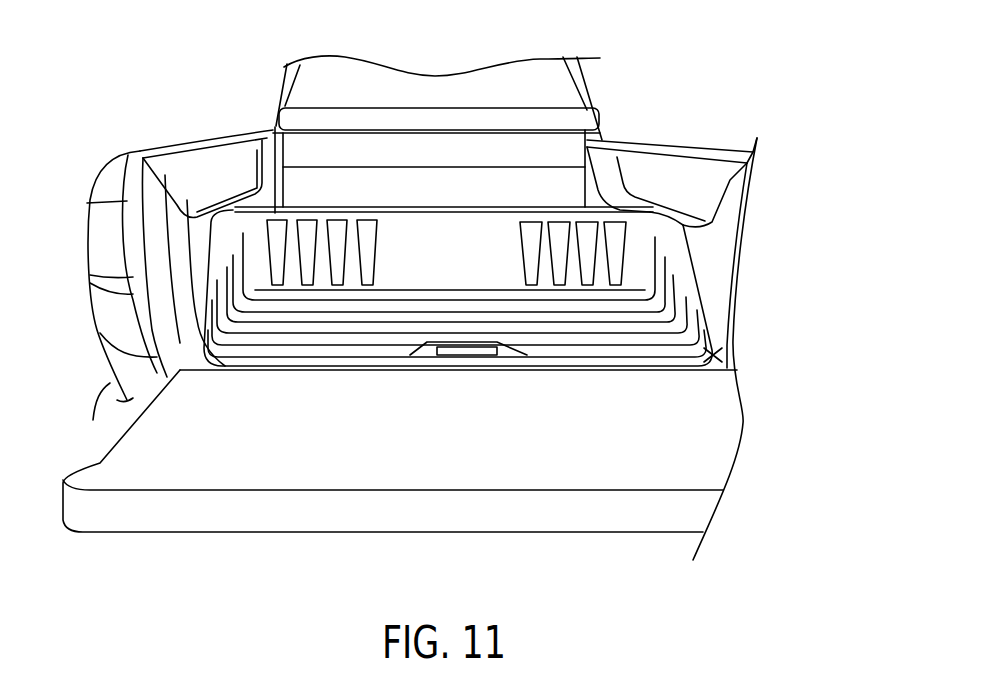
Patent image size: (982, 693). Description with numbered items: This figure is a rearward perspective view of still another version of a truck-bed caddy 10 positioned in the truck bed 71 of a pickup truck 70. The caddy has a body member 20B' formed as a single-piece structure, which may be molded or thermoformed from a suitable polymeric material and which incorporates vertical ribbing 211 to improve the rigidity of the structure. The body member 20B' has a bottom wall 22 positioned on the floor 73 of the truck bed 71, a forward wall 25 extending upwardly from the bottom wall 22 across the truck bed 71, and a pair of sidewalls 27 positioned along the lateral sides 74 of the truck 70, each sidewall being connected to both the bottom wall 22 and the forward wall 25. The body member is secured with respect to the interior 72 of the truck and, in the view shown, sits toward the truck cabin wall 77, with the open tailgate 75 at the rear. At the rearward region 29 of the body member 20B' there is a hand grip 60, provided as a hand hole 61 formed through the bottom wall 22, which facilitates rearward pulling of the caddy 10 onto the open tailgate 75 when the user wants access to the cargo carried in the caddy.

The truck-bed caddy 10 is at (763, 197).
The body member 20B' is at (522, 288).
The bottom wall 22 is at (657, 340).
The forward wall 25 is at (540, 217).
The sidewalls 27 is at (222, 258).
The rearward region 29 is at (322, 360).
The hand grip 60 is at (495, 348).
The hand hole 61 is at (473, 347).
The pickup truck 70 is at (493, 93).
The truck bed 71 is at (190, 316).
The interior of the truck 72 is at (225, 157).
The floor of truck bed 73 is at (710, 353).
The lateral sides of truck 74 is at (657, 172).
The tailgate 75 is at (700, 430).
The truck cabin wall 77 is at (437, 187).
The louver slots 211 is at (340, 227).